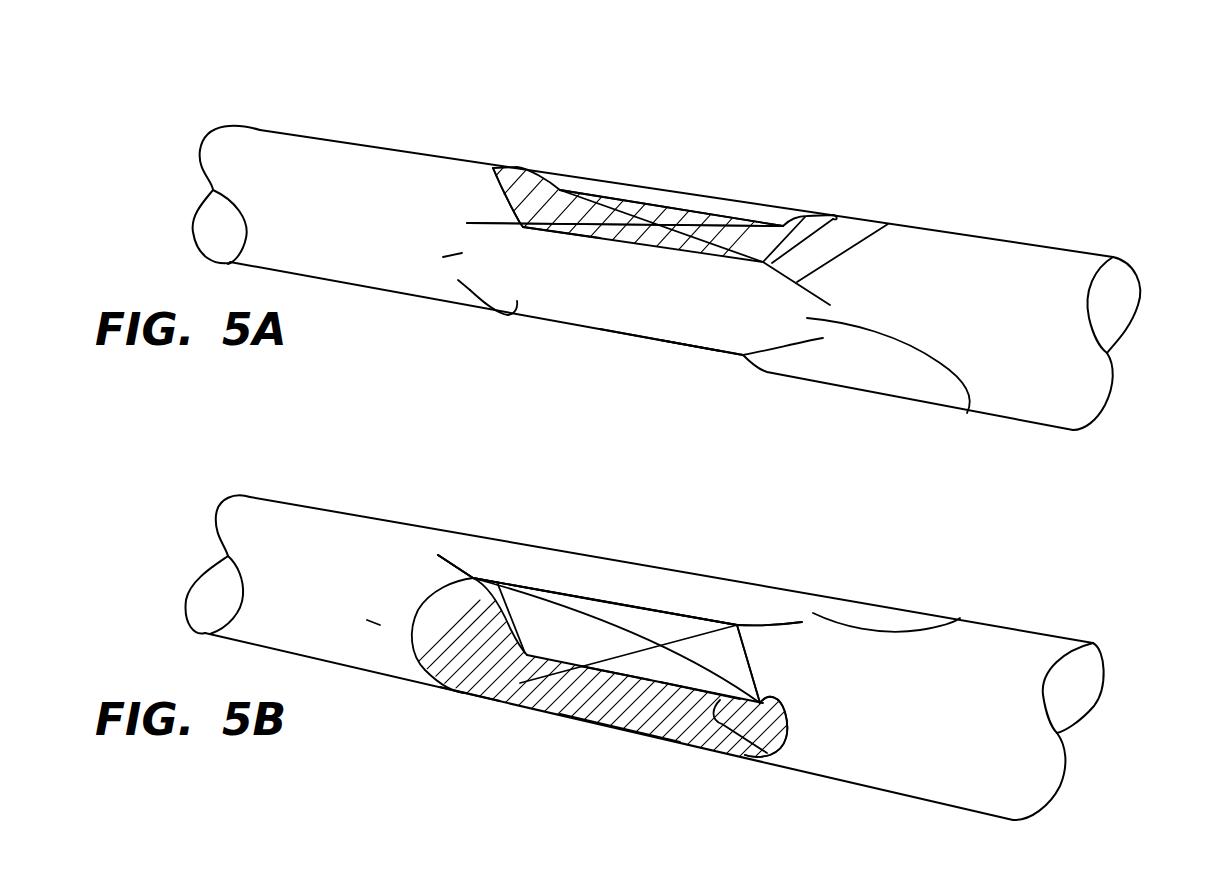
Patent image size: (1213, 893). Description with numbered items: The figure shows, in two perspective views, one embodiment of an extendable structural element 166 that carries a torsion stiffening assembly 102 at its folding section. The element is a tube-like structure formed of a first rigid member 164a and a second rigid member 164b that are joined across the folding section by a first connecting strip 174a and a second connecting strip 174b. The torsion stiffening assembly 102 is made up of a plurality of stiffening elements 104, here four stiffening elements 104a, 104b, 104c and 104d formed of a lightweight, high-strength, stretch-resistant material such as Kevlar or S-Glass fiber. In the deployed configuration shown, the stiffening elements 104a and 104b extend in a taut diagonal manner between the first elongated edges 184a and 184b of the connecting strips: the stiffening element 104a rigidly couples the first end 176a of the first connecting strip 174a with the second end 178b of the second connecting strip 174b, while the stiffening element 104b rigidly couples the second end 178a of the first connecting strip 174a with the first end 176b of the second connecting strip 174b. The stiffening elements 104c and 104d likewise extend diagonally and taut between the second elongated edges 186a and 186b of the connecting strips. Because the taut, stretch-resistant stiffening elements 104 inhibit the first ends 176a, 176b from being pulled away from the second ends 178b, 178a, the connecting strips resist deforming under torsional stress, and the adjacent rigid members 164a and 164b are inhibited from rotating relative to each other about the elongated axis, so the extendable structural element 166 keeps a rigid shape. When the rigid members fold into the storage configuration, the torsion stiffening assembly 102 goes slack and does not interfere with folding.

In FIG. 5A, the torsion stiffening assembly 102 is at (828, 128).
In FIG. 5B, the torsion stiffening assembly 102 is at (830, 546).
In FIG. 5A, the stiffening elements 104 is at (634, 113).
In FIG. 5B, the stiffening elements 104 is at (512, 766).
In FIG. 5A, the stiffening element 104a is at (470, 290).
In FIG. 5B, the stiffening element 104a is at (453, 558).
In FIG. 5A, the stiffening element 104b is at (807, 348).
In FIG. 5B, the stiffening element 104b is at (793, 621).
In FIG. 5A, the stiffening element 104c is at (490, 227).
In FIG. 5B, the stiffening element 104c is at (702, 667).
In FIG. 5A, the stiffening element 104d is at (888, 224).
In FIG. 5B, the stiffening element 104d is at (603, 648).
In FIG. 5A, the first rigid member 164a is at (280, 157).
In FIG. 5B, the first rigid member 164a is at (277, 513).
In FIG. 5A, the second rigid member 164b is at (1043, 273).
In FIG. 5B, the second rigid member 164b is at (957, 643).
In FIG. 5A, the extendable structural element 166 is at (527, 70).
In FIG. 5B, the extendable structural element 166 is at (511, 462).
In FIG. 5A, the first connecting strip 174a is at (698, 318).
In FIG. 5B, the first connecting strip 174a is at (687, 590).
In FIG. 5A, the second connecting strip 174b is at (725, 219).
In FIG. 5B, the second connecting strip 174b is at (488, 698).
In FIG. 5A, the first end of the first connecting strip 176a is at (443, 257).
In FIG. 5B, the first end of the first connecting strip 176a is at (387, 532).
In FIG. 5B, the first end of the second connecting strip 176b is at (367, 620).
In FIG. 5A, the second end of the first connecting strip 178a is at (967, 413).
In FIG. 5B, the second end of the first connecting strip 178a is at (960, 618).
In FIG. 5A, the second end of the second connecting strip 178b is at (815, 210).
In FIG. 5B, the second end of the second connecting strip 178b is at (810, 740).
In FIG. 5A, the first elongated edge of the first connecting strip 184a is at (660, 340).
In FIG. 5B, the first elongated edge of the first connecting strip 184a is at (553, 590).
In FIG. 5B, the first elongated edge of the second connecting strip 184b is at (617, 664).
In FIG. 5A, the second elongated edge of the first connecting strip 186a is at (553, 230).
In FIG. 5A, the second elongated edge of the second connecting strip 186b is at (632, 208).
In FIG. 5B, the second elongated edge of the second connecting strip 186b is at (761, 705).